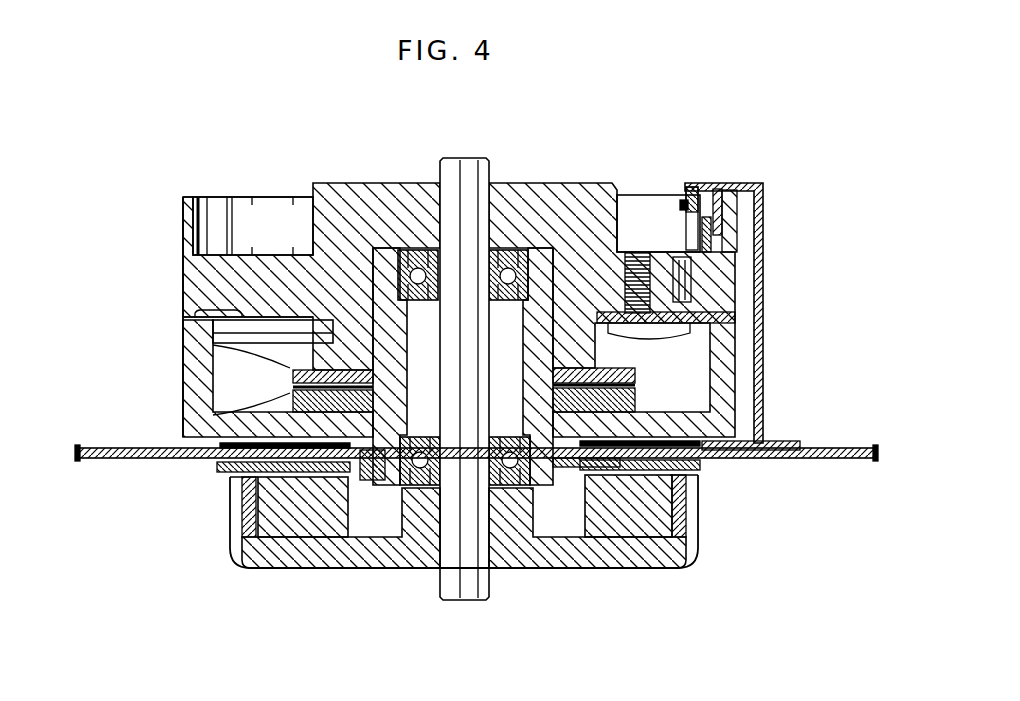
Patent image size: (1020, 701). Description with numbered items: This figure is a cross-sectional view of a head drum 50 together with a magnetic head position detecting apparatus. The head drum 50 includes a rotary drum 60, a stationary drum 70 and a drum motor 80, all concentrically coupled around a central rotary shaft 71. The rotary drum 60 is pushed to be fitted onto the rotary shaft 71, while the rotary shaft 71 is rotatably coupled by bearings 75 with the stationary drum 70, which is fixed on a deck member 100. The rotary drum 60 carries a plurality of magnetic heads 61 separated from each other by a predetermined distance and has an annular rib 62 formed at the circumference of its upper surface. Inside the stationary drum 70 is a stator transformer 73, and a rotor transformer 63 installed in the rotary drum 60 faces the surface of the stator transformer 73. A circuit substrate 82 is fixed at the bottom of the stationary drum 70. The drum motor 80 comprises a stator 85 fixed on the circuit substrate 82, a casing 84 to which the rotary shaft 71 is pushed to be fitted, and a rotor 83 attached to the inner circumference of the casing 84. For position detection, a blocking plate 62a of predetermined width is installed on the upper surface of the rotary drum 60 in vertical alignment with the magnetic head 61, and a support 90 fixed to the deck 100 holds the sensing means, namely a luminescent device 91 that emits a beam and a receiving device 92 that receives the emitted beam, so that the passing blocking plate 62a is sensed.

The head drum 50 is at (183, 212).
The rotary drum 60 is at (183, 258).
The annular rib 62 is at (196, 213).
The blocking plate 62a is at (697, 225).
The rotor transformer 63 is at (257, 343).
The stationary drum 70 is at (183, 365).
The rotary shaft 71 is at (480, 603).
The stator transformer 73 is at (290, 397).
The bearings 75 is at (413, 270).
The drum motor 80 is at (230, 518).
The circuit substrate 82 is at (215, 473).
The rotor 83 is at (250, 565).
The casing 84 is at (232, 547).
The stator 85 is at (327, 540).
The support 90 is at (763, 318).
The luminescent device 91 is at (690, 200).
The receiving device 92 is at (718, 190).
The magnetic head 61 is at (717, 300).
The deck member 100 is at (92, 458).